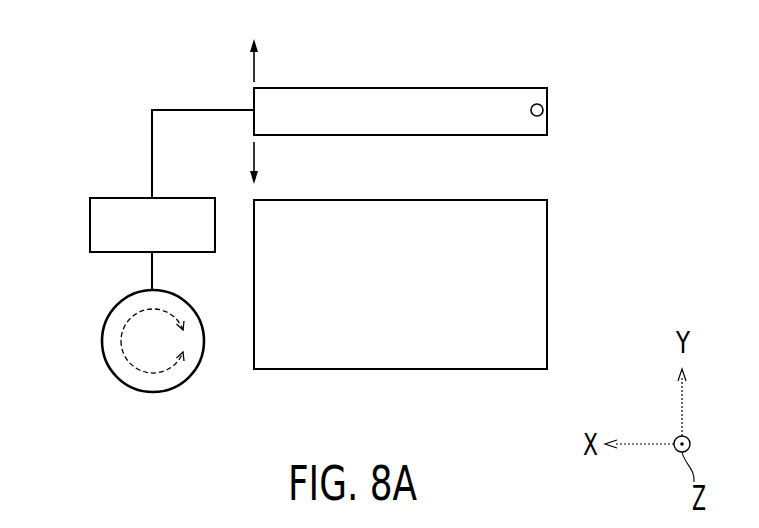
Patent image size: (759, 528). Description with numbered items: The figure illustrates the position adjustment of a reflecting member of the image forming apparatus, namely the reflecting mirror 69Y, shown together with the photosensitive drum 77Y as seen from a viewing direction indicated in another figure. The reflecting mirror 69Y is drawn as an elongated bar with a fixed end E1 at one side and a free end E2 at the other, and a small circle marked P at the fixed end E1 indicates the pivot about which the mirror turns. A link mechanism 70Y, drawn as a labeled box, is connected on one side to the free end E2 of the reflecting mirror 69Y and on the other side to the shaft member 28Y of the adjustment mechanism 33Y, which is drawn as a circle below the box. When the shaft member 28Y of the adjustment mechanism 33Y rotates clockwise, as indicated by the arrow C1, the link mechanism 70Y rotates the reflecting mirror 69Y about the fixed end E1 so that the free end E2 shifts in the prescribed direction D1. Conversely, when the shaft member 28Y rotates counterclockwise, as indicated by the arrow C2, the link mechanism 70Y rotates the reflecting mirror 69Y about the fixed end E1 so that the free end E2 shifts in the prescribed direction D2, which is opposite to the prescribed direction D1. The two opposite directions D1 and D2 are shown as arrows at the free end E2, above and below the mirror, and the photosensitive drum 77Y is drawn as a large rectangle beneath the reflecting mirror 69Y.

The reflecting mirror 69Y is at (478, 87).
The link mechanism 70Y is at (115, 198).
The photosensitive drum 77Y is at (533, 268).
The adjustment mechanism 33Y is at (120, 367).
The shaft member 28Y is at (117, 379).
The pivot point P is at (538, 103).
The fixed end E1 is at (549, 124).
The free end E2 is at (253, 98).
The prescribed direction D1 is at (256, 66).
The prescribed direction D2 is at (256, 158).
The arrow indicating clockwise rotation C1 is at (178, 308).
The arrow indicating counterclockwise rotation C2 is at (172, 373).